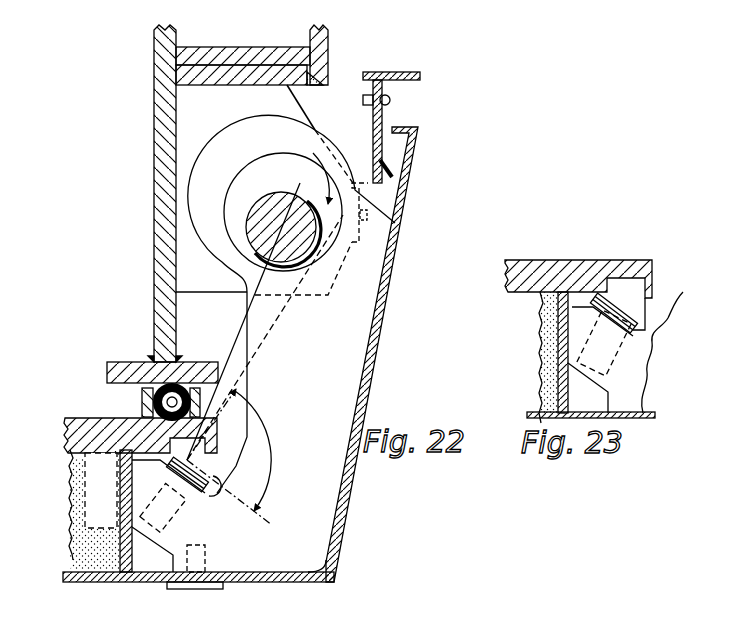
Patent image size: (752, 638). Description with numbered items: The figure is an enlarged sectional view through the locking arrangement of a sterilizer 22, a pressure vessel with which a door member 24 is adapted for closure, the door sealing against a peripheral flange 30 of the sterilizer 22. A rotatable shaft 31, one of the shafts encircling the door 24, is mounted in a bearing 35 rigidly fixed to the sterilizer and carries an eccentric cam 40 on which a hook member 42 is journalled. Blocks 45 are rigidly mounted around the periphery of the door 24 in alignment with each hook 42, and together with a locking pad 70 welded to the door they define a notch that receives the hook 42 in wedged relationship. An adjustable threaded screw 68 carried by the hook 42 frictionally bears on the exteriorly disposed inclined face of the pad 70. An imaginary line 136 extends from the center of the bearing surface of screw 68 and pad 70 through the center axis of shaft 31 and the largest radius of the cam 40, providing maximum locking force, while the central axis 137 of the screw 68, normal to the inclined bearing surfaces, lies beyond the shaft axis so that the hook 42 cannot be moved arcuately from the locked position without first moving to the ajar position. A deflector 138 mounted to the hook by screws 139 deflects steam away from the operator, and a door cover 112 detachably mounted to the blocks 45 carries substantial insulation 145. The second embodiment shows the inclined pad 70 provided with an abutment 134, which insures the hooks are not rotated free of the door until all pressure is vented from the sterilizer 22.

In FIG. 22, the sterilizer 22 is at (153, 320).
In FIG. 22, the door member 24 is at (107, 427).
In FIG. 23, the door member 24 is at (558, 270).
In FIG. 22, the peripheral flange 30 is at (108, 366).
In FIG. 22, the rotatable shaft 31 is at (278, 203).
In FIG. 22, the bearing 35 is at (283, 113).
In FIG. 22, the eccentric cam 40 is at (268, 170).
In FIG. 22, the hook member 42 is at (274, 408).
In FIG. 23, the hook member 42 is at (628, 393).
In FIG. 22, the block 45 is at (73, 542).
In FIG. 22, the adjustable threaded screw 68 is at (170, 503).
In FIG. 22, the locking pad 70 is at (197, 459).
In FIG. 23, the locking pad 70 is at (623, 293).
In FIG. 22, the door cover 112 is at (90, 574).
In FIG. 23, the abutment 134 is at (628, 332).
In FIG. 22, the imaginary line 136 is at (245, 324).
In FIG. 22, the central axis of screw 137 is at (273, 327).
In FIG. 22, the deflector 138 is at (352, 500).
In FIG. 22, the screw 139 is at (225, 589).
In FIG. 22, the insulation 145 is at (76, 480).